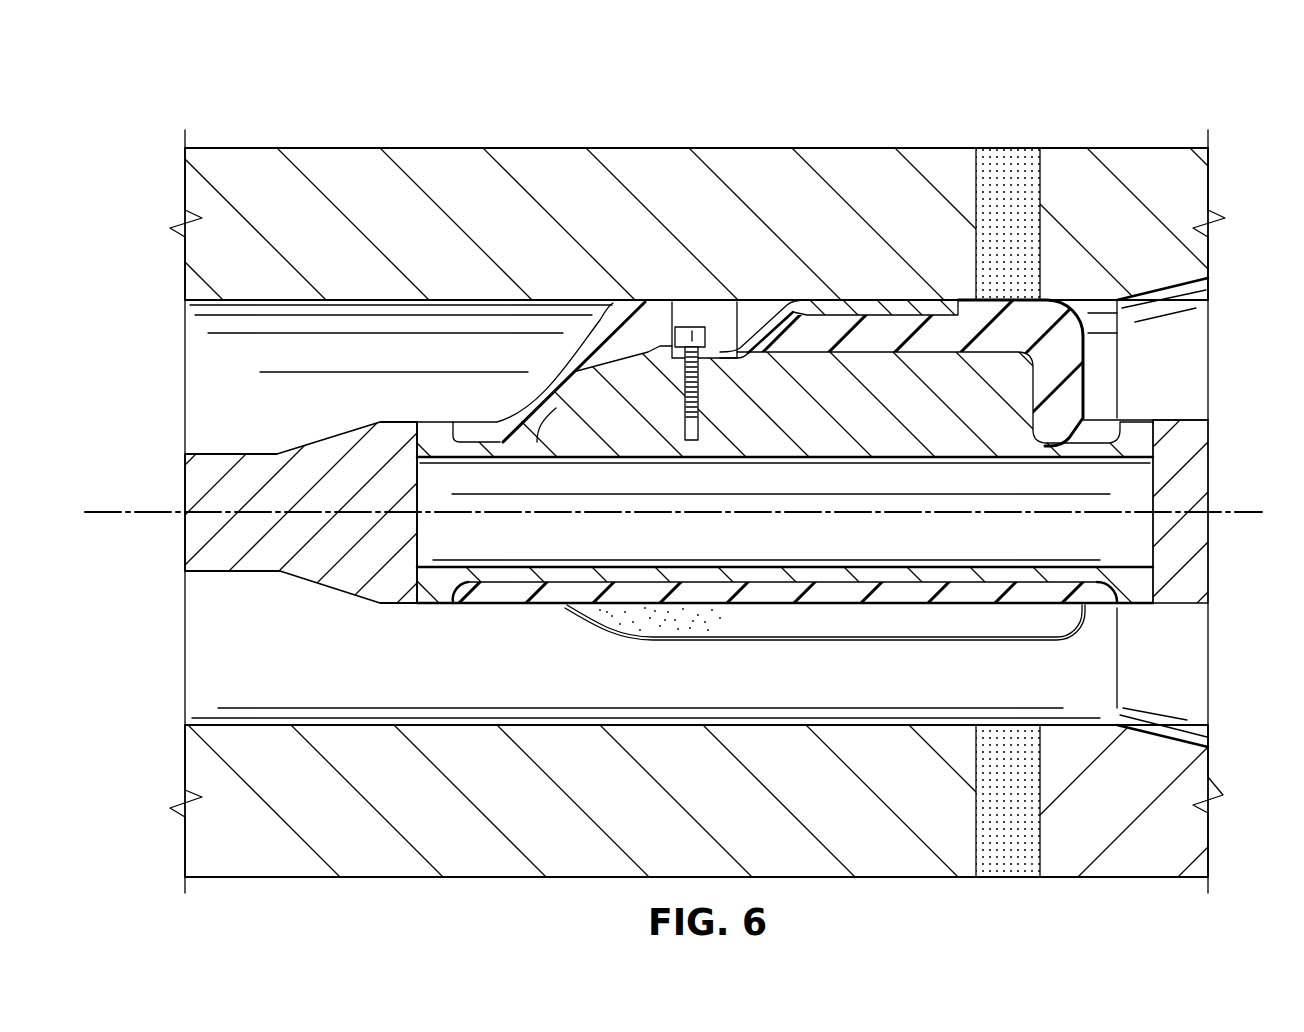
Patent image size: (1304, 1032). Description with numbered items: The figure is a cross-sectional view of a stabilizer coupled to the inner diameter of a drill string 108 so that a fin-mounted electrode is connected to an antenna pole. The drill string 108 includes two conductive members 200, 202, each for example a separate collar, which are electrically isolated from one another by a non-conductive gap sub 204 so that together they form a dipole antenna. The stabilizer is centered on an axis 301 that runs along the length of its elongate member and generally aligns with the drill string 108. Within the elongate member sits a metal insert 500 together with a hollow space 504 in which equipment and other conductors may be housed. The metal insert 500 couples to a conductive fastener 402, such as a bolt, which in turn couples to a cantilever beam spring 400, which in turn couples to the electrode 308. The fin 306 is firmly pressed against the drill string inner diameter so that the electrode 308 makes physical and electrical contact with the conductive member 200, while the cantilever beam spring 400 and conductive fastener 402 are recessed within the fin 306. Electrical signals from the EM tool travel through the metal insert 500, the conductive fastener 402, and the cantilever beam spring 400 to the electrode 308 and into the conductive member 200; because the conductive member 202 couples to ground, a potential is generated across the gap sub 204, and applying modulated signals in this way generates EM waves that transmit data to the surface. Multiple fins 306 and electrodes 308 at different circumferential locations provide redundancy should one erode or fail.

The drill string 108 is at (568, 76).
The conductive member 200 is at (455, 157).
The conductive member 202 is at (1105, 157).
The non-conductive gap sub 204 is at (1004, 157).
The axis 301 is at (101, 503).
The fin 306 is at (1098, 366).
The electrode 308 is at (882, 318).
The cantilever beam spring 400 is at (749, 318).
The conductive fastener 402 is at (683, 400).
The metal insert 500 is at (841, 418).
The hollow space 504 is at (796, 524).